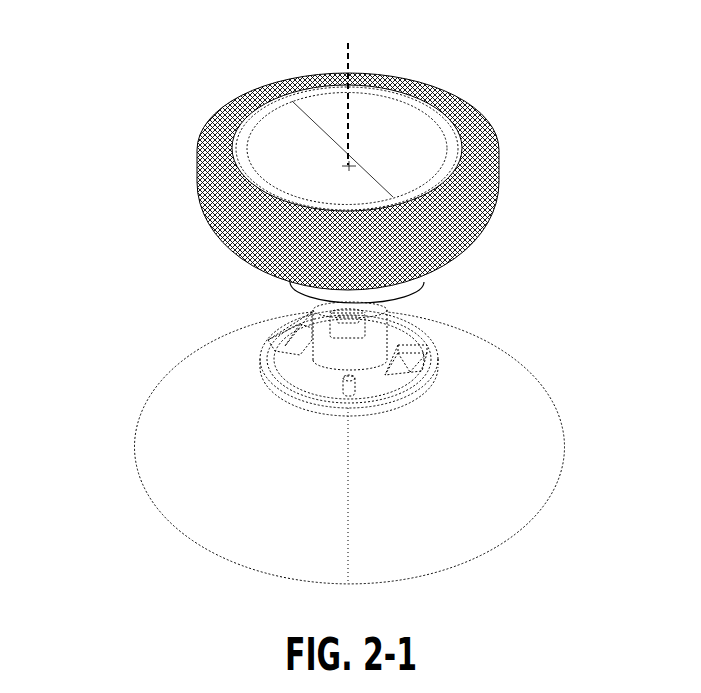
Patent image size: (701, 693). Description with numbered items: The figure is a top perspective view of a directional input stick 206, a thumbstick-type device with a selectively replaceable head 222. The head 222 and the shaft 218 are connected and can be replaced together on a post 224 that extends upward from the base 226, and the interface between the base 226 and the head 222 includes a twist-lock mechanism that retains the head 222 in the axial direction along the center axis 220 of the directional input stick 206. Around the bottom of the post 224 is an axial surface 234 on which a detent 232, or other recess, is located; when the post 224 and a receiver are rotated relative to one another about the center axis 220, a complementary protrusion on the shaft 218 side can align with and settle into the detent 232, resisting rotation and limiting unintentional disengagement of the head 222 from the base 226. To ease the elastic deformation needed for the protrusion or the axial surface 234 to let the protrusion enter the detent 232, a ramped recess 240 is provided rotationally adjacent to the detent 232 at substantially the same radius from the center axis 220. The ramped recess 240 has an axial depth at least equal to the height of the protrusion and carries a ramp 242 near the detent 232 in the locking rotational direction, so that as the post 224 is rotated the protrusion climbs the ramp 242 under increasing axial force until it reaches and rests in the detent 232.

The directional input stick 206 is at (336, 302).
The shaft 218 is at (418, 292).
The center axis 220 is at (348, 55).
The head 222 is at (500, 172).
The post 224 is at (377, 342).
The base 226 is at (540, 445).
The detent 232 is at (342, 385).
The axial surface 234 is at (283, 363).
The ramped recess 240 is at (412, 360).
The ramp 242 is at (383, 382).